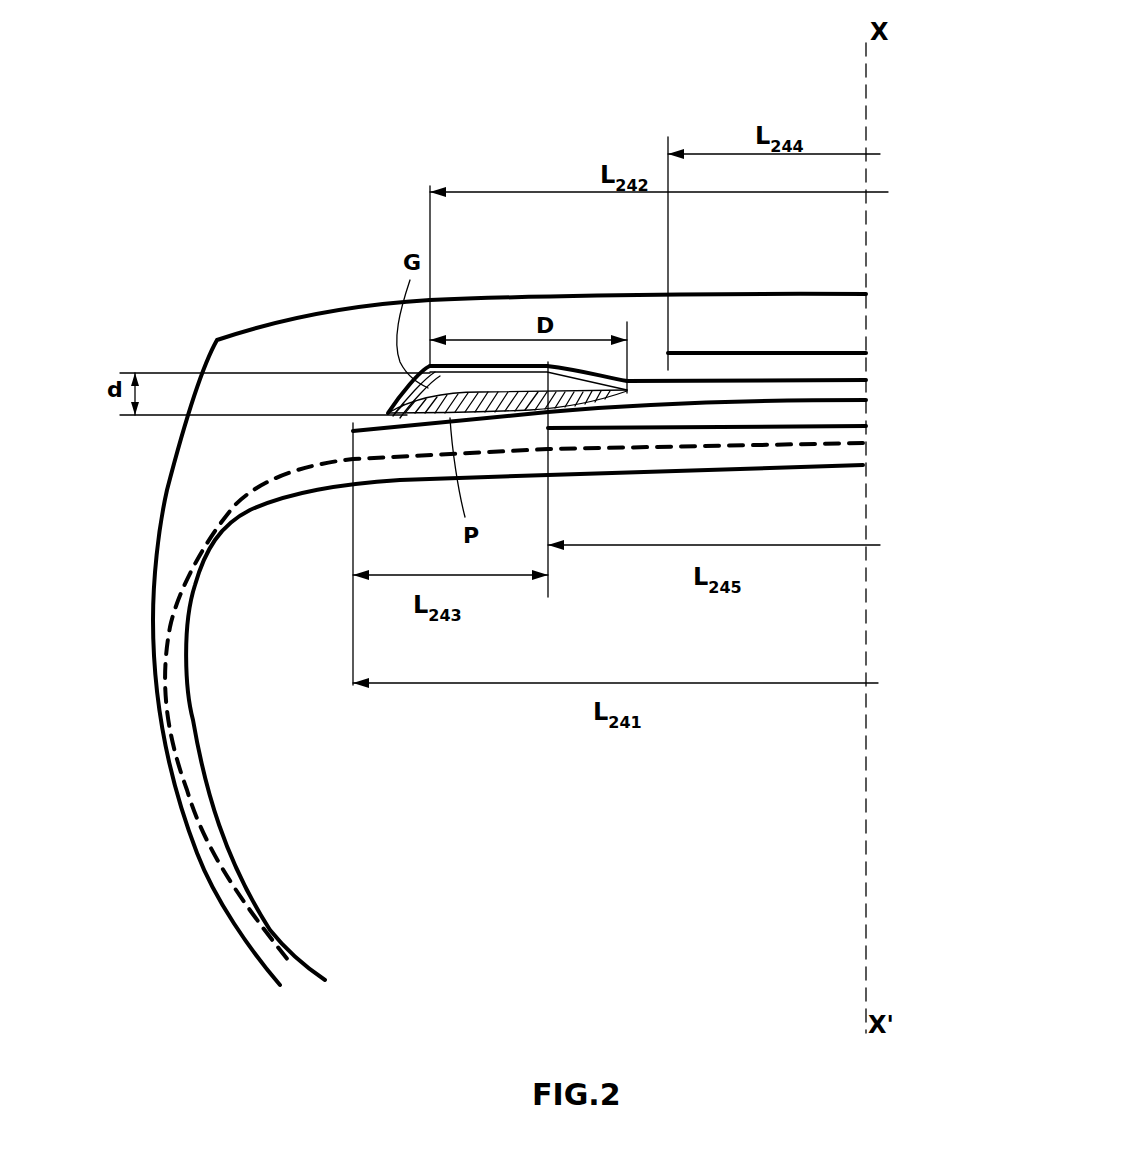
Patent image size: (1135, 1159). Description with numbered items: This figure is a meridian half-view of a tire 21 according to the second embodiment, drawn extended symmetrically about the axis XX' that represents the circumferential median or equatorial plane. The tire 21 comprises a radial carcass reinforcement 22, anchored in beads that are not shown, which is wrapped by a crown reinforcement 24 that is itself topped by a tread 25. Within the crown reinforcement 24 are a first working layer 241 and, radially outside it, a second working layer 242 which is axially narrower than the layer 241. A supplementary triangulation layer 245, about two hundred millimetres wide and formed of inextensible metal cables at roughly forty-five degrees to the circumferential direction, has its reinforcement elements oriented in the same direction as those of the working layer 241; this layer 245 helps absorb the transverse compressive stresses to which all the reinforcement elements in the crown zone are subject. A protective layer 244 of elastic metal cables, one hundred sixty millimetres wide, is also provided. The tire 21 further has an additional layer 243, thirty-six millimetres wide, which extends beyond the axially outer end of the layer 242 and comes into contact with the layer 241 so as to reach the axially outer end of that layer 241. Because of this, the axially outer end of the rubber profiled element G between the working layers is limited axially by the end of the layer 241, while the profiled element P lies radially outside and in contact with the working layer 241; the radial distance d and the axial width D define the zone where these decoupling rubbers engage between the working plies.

The tire 21 is at (117, 305).
The carcass reinforcement 22 is at (183, 577).
The crown reinforcement 24 is at (895, 390).
The tread 25 is at (763, 300).
The first working layer 241 is at (833, 400).
The second working layer 242 is at (807, 380).
The additional layer 243 is at (378, 410).
The protective layer 244 is at (675, 350).
The triangulation layer 245 is at (567, 430).